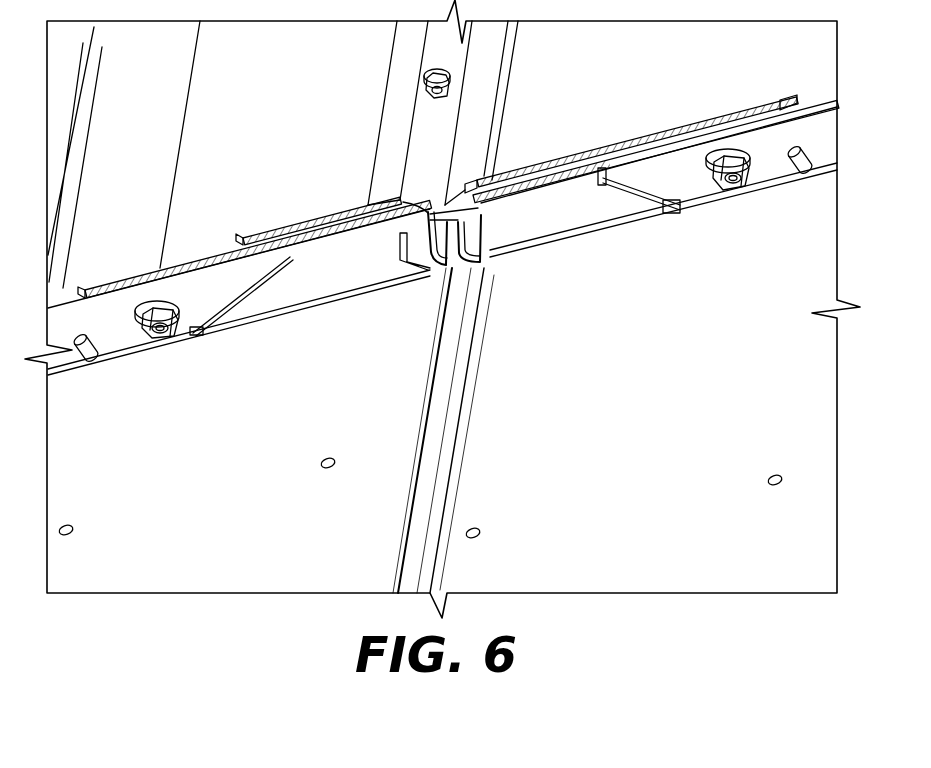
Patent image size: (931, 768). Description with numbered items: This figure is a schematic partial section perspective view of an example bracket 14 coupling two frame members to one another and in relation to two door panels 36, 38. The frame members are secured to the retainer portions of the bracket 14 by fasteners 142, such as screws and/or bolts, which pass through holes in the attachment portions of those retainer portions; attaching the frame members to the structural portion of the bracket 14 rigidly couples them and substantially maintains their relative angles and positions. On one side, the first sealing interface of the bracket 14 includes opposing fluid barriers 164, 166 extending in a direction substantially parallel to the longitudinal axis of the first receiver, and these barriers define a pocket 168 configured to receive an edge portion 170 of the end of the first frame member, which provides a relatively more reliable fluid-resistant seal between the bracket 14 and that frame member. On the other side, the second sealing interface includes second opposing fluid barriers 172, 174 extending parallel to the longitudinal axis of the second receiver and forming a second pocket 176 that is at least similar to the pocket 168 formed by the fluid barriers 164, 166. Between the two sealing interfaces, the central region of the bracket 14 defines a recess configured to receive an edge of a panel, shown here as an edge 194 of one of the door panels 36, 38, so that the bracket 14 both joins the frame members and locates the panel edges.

The bracket 14 is at (527, 212).
The door panel 36 is at (640, 279).
The door panel 38 is at (302, 372).
The fasteners 142 is at (163, 305).
The fluid barrier 164 is at (600, 150).
The fluid barrier 166 is at (603, 180).
The pocket 168 is at (603, 170).
The edge portion 170 is at (672, 147).
The second fluid barrier 172 is at (383, 202).
The second fluid barrier 174 is at (283, 262).
The second pocket 176 is at (282, 248).
The edge 194 is at (457, 262).